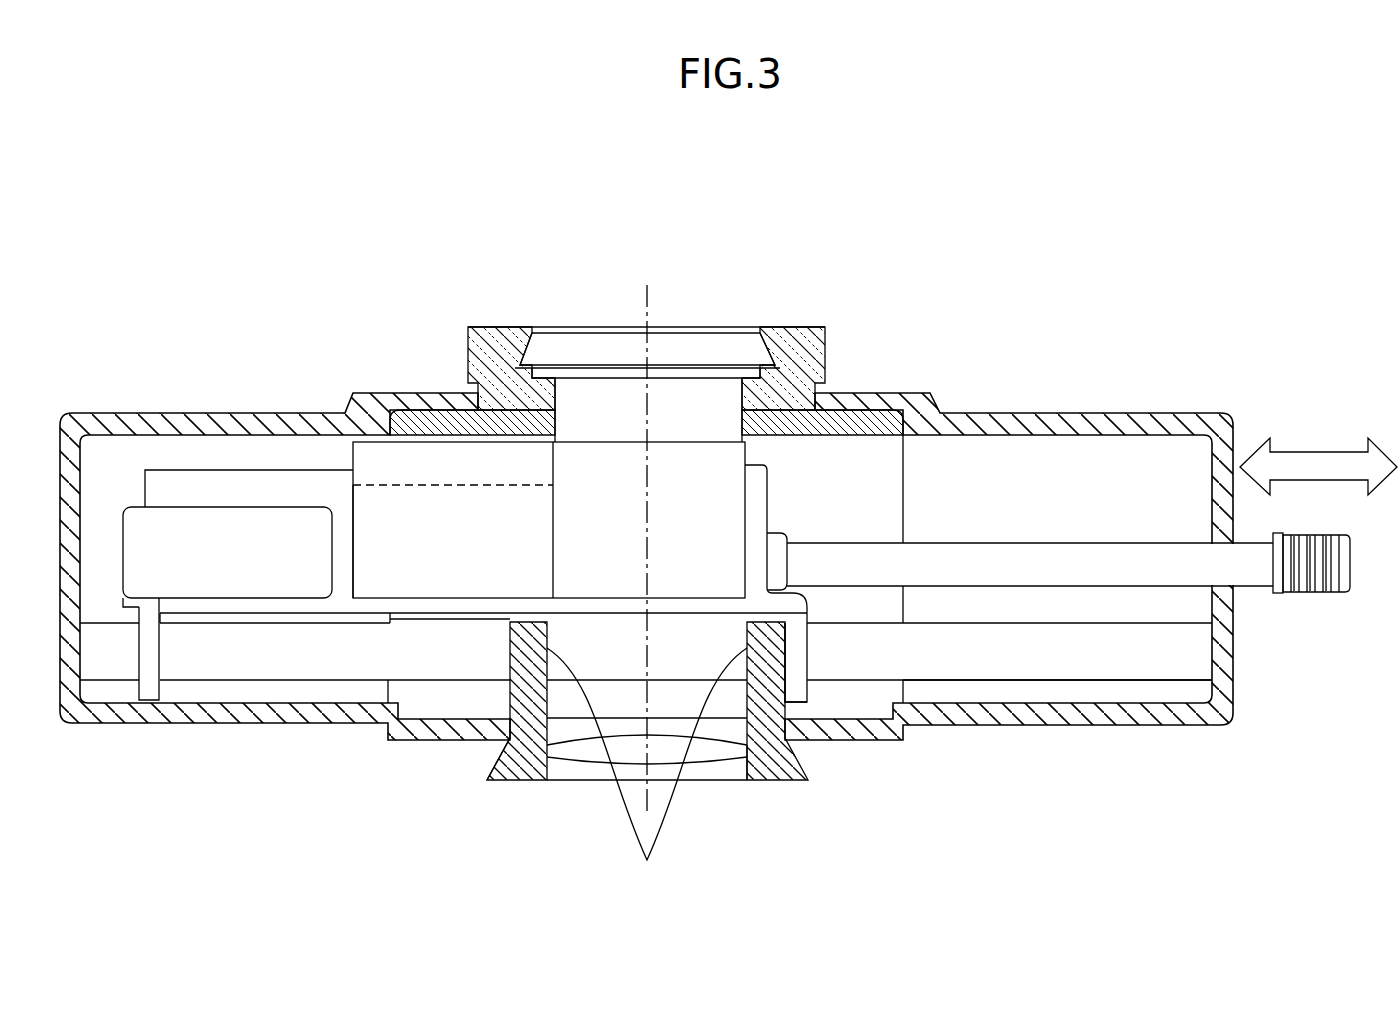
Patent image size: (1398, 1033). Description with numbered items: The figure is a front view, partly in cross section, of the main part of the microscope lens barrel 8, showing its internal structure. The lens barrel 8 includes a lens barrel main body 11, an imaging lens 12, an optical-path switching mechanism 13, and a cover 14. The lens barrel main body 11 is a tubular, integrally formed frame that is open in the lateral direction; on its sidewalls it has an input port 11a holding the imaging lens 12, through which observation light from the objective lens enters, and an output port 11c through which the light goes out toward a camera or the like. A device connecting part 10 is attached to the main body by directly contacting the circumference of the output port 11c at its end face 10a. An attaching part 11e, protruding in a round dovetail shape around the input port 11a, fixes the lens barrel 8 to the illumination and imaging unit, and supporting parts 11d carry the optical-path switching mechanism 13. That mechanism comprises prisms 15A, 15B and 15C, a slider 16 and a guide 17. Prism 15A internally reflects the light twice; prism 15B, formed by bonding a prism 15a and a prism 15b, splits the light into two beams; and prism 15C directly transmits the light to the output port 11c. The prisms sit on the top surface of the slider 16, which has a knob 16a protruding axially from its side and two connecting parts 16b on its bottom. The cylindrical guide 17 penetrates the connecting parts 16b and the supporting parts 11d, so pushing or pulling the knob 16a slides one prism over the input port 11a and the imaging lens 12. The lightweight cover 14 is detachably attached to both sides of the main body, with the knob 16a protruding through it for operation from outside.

The lens barrel 8 is at (768, 233).
The device connecting part 10 is at (788, 327).
The end face 10a is at (505, 420).
The lens barrel main body 11 is at (820, 742).
The input port 11a is at (726, 775).
The output port 11c is at (667, 425).
The supporting part 11d is at (647, 591).
The attaching part 11e is at (514, 783).
The imaging lens 12 is at (580, 766).
The optical-path switching mechanism 13 is at (795, 532).
The cover 14 is at (118, 413).
The prism 15A is at (718, 440).
The prism 15B is at (300, 313).
The prism 15a is at (352, 468).
The prism 15b is at (380, 483).
The prism 15C is at (210, 470).
The slider 16 is at (336, 623).
The knob 16a is at (985, 543).
The connecting part 16b is at (137, 665).
The guide 17 is at (993, 683).